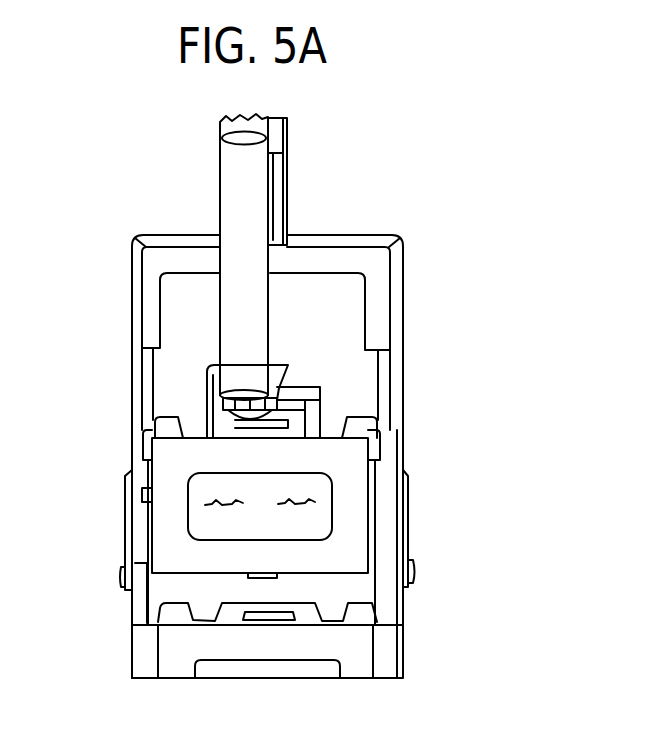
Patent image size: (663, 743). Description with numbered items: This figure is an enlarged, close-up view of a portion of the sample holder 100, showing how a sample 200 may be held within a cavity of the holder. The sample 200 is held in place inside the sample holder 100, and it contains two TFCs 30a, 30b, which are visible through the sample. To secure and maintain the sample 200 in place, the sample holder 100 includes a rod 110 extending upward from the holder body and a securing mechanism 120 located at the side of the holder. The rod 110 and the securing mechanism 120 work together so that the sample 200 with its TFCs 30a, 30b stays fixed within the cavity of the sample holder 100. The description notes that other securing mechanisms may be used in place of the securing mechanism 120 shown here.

The sample holder 100 is at (417, 295).
The rod 110 is at (238, 233).
The securing mechanism 120 is at (112, 585).
The sample 200 is at (318, 528).
The TFC 30a is at (222, 505).
The TFC 30b is at (322, 494).